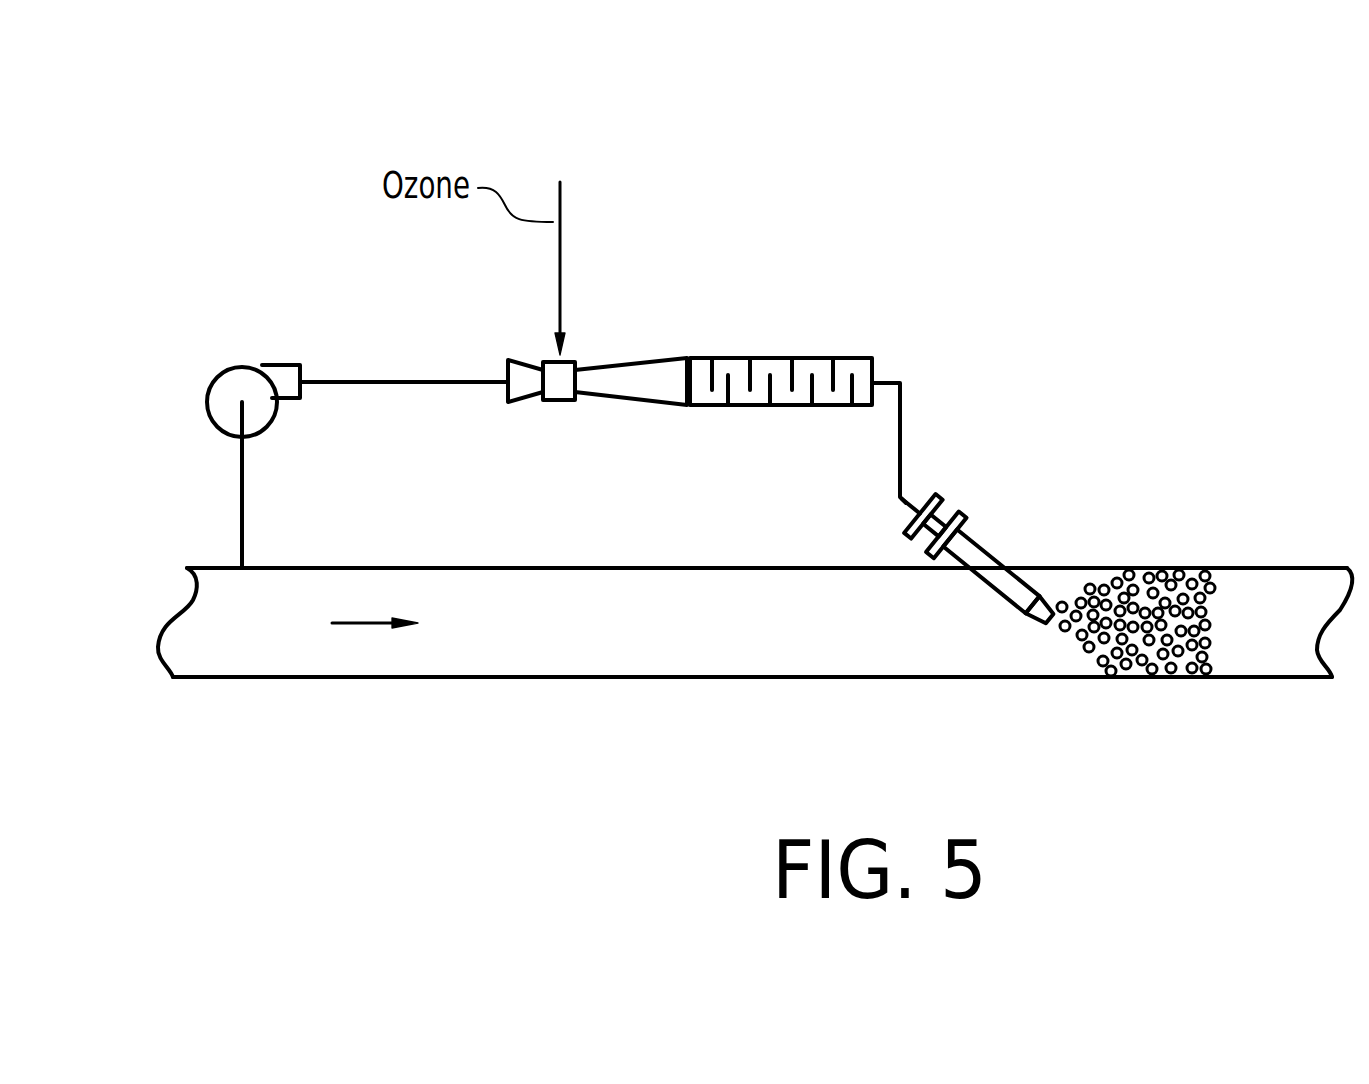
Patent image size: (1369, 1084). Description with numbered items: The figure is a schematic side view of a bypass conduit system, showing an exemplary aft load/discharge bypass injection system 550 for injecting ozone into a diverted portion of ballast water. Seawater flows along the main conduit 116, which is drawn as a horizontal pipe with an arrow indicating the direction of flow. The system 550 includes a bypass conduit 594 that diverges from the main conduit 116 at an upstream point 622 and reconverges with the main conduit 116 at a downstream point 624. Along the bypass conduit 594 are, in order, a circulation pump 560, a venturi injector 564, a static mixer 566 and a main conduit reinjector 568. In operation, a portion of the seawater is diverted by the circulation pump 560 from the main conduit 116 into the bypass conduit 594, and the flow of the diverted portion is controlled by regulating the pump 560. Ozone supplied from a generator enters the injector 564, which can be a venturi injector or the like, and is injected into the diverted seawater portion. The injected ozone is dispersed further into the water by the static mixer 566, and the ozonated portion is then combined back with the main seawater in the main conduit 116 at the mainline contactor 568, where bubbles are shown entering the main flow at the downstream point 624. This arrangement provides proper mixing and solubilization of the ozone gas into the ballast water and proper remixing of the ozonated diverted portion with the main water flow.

The aft load/discharge bypass injection system 550 is at (348, 262).
The circulation pump 560 is at (208, 390).
The upstream point 622 is at (238, 565).
The bypass conduit 594 is at (380, 384).
The venturi injector 564 is at (650, 357).
The static mixer 566 is at (805, 357).
The main conduit reinjector 568 is at (988, 537).
The downstream point 624 is at (1027, 563).
The main conduit 116 is at (350, 678).